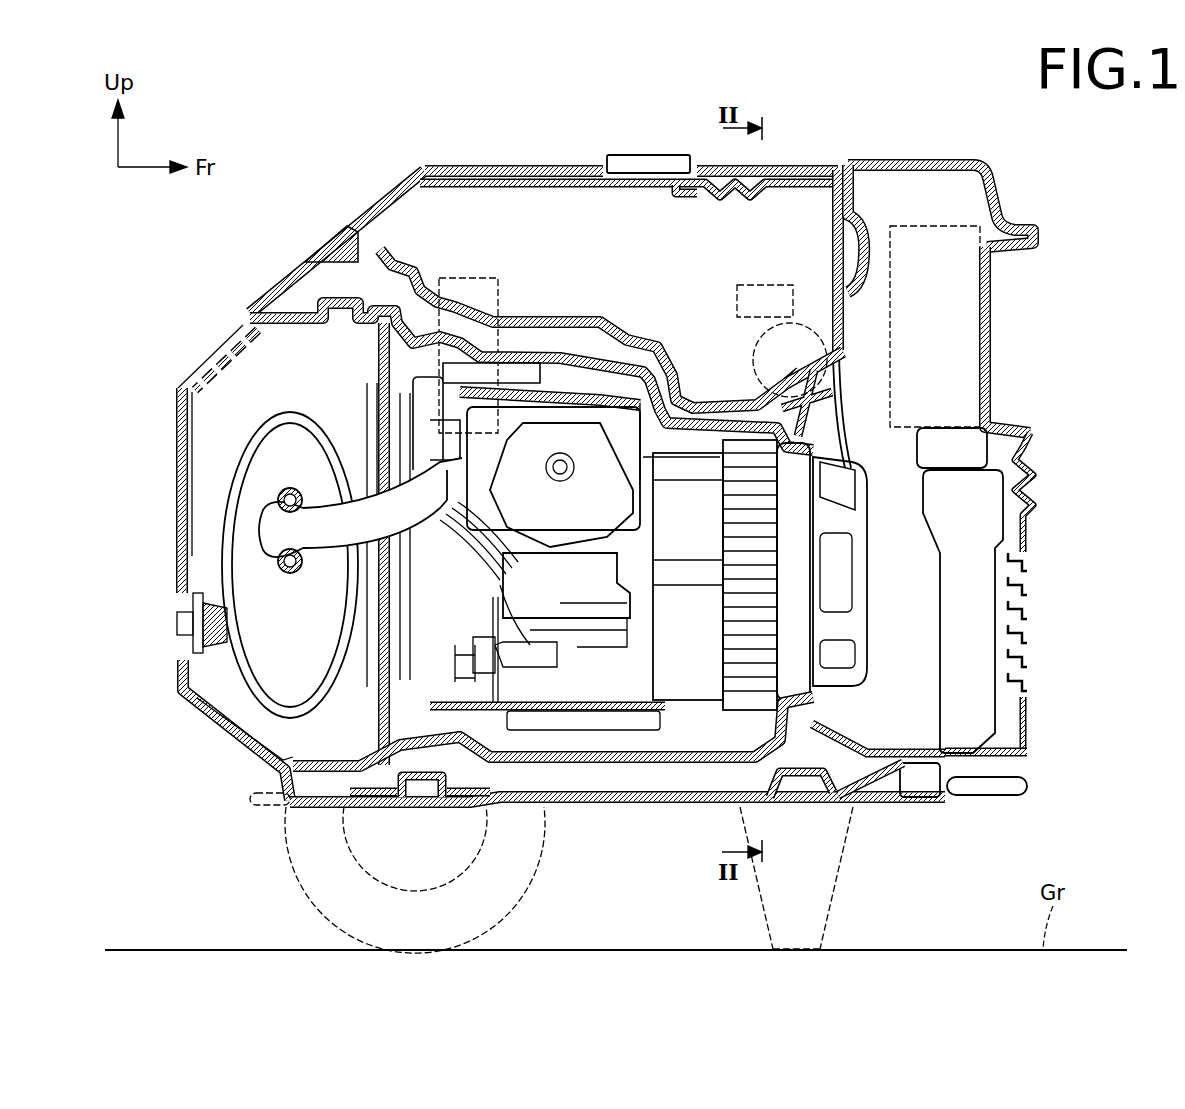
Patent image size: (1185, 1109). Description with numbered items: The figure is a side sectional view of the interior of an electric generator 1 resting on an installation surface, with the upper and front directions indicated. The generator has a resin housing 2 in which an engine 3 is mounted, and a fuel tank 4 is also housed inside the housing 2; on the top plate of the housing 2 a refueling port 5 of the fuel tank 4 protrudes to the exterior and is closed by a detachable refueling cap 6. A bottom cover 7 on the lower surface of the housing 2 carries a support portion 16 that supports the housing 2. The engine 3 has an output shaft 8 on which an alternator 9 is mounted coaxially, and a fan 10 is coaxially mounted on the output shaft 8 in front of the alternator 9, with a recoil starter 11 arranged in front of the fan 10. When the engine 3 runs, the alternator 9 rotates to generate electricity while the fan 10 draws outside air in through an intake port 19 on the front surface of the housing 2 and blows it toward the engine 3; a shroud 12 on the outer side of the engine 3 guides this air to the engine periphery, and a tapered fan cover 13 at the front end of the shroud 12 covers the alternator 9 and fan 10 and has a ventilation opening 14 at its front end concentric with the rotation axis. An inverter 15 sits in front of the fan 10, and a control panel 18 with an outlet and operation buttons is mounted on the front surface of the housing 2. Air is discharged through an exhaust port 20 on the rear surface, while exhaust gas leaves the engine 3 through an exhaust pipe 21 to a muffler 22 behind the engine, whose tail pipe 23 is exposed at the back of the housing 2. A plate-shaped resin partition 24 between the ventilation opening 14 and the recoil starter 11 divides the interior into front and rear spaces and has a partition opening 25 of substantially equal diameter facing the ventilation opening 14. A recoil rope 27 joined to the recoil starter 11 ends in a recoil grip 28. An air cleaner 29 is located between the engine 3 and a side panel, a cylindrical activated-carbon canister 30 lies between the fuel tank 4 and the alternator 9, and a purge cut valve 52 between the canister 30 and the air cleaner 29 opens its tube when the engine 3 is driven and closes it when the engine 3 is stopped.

The electric generator 1 is at (412, 138).
The housing 2 is at (954, 162).
The engine 3 is at (602, 680).
The fuel tank 4 is at (797, 178).
The refueling port 5 is at (686, 182).
The refueling cap 6 is at (638, 158).
The bottom cover 7 is at (920, 798).
The output shaft 8 is at (682, 690).
The alternator 9 is at (692, 580).
The fan 10 is at (742, 705).
The recoil starter 11 is at (882, 798).
The shroud 12 is at (532, 345).
The fan cover 13 is at (707, 415).
The ventilation opening 14 is at (835, 690).
The inverter 15 is at (970, 713).
The support portion 16 is at (842, 880).
The control panel 18 is at (990, 362).
The intake port 19 is at (1030, 600).
The exhaust port 20 is at (237, 360).
The exhaust pipe 21 is at (282, 530).
The muffler 22 is at (272, 658).
The tail pipe 23 is at (176, 620).
The partition 24 is at (848, 397).
The partition opening 25 is at (800, 718).
The recoil rope 27 is at (848, 450).
The recoil grip 28 is at (868, 364).
The air cleaner 29 is at (492, 276).
The canister 30 is at (820, 335).
The purge cut valve 52 is at (759, 284).